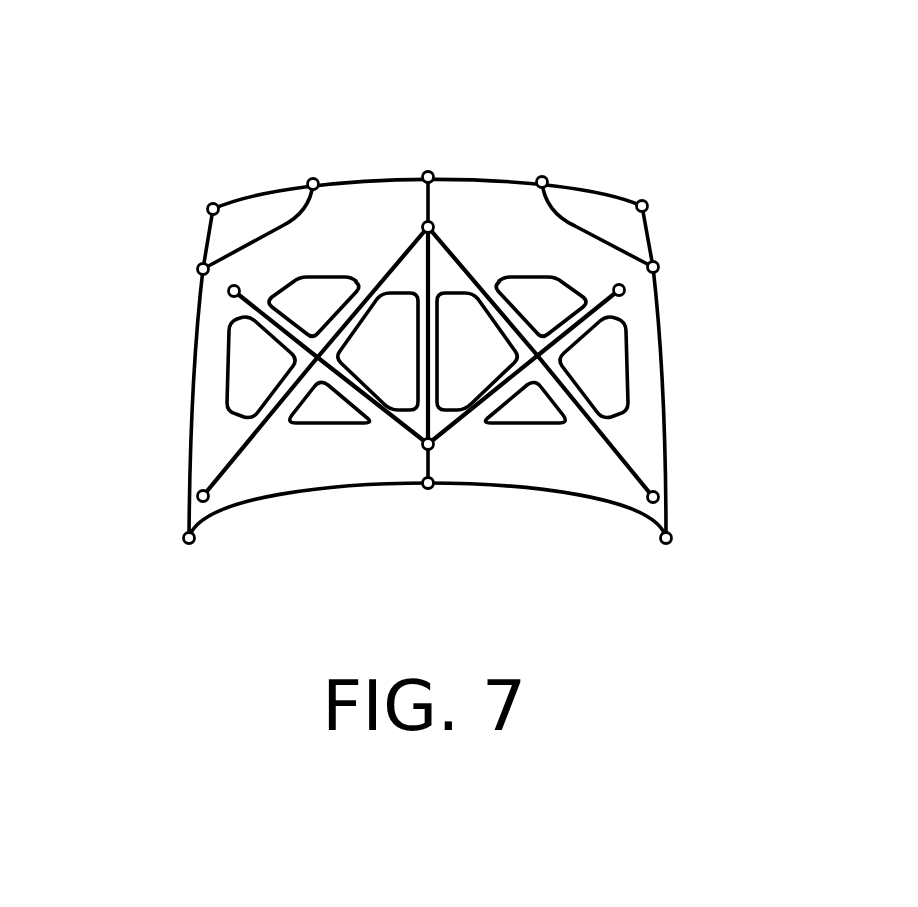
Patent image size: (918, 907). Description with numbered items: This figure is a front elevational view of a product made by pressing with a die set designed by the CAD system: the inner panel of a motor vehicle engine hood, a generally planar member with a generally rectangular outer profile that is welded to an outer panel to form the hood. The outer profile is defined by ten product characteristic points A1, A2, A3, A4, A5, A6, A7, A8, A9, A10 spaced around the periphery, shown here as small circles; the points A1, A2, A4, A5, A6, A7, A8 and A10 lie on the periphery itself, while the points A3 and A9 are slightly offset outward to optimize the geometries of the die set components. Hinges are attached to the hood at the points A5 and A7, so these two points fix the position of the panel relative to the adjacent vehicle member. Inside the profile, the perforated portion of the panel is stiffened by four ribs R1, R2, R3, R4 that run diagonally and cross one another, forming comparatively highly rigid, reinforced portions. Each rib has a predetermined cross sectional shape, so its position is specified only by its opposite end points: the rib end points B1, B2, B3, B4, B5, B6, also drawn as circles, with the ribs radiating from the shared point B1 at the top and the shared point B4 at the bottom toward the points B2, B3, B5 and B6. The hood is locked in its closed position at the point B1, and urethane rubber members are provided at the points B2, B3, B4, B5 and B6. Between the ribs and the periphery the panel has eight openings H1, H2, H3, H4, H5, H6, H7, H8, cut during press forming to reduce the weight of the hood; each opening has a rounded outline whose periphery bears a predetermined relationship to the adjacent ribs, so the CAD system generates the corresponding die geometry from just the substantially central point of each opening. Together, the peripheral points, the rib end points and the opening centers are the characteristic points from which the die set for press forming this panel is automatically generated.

The product characteristic point A1 is at (425, 165).
The product characteristic point A2 is at (548, 171).
The product characteristic point A3 is at (647, 195).
The product characteristic point A4 is at (663, 259).
The product characteristic point A5 is at (680, 545).
The product characteristic point A6 is at (427, 497).
The product characteristic point A7 is at (180, 545).
The product characteristic point A8 is at (192, 262).
The product characteristic point A9 is at (203, 198).
The product characteristic point A10 is at (317, 168).
The rib end point B1 is at (437, 212).
The rib end point B2 is at (668, 487).
The rib end point B3 is at (182, 490).
The rib end point B4 is at (437, 453).
The rib end point B5 is at (217, 293).
The rib end point B6 is at (634, 290).
The opening H1 is at (547, 297).
The opening H2 is at (602, 352).
The opening H3 is at (505, 415).
The opening H4 is at (455, 313).
The opening H5 is at (312, 297).
The opening H6 is at (235, 395).
The opening H7 is at (298, 420).
The opening H8 is at (388, 365).
The rib R1 is at (593, 390).
The rib R2 is at (520, 398).
The rib R3 is at (268, 391).
The rib R4 is at (335, 402).